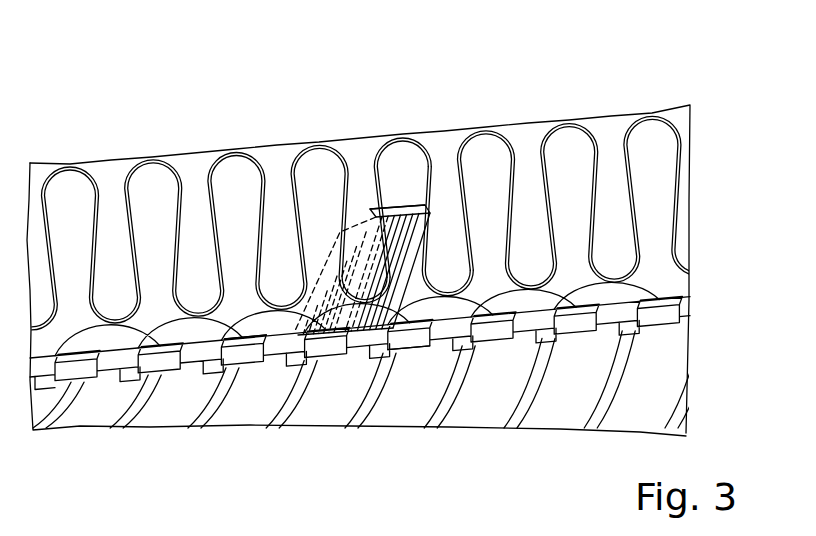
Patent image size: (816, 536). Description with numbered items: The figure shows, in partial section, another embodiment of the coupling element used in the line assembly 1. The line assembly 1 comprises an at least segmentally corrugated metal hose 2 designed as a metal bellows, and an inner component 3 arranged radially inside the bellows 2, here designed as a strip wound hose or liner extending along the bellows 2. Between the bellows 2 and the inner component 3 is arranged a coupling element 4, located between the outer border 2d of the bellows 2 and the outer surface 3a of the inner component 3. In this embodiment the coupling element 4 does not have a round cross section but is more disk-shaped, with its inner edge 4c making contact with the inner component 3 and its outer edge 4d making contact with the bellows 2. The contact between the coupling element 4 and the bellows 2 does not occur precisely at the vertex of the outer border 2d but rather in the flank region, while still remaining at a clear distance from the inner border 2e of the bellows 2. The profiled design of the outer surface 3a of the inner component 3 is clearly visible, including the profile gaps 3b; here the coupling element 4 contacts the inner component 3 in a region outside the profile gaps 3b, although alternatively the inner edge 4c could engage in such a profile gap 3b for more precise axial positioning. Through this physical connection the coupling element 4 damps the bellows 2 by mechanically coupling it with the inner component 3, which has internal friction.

The line assembly 1 is at (100, 110).
The metal hose 2 is at (712, 178).
The outer border 2d is at (403, 200).
The inner border 2e is at (438, 322).
The inner component 3 is at (675, 306).
The outer surface 3a is at (260, 337).
The profile gap 3b is at (394, 348).
The coupling element 4 is at (367, 198).
The inner edge 4c is at (340, 348).
The outer edge 4d is at (388, 207).